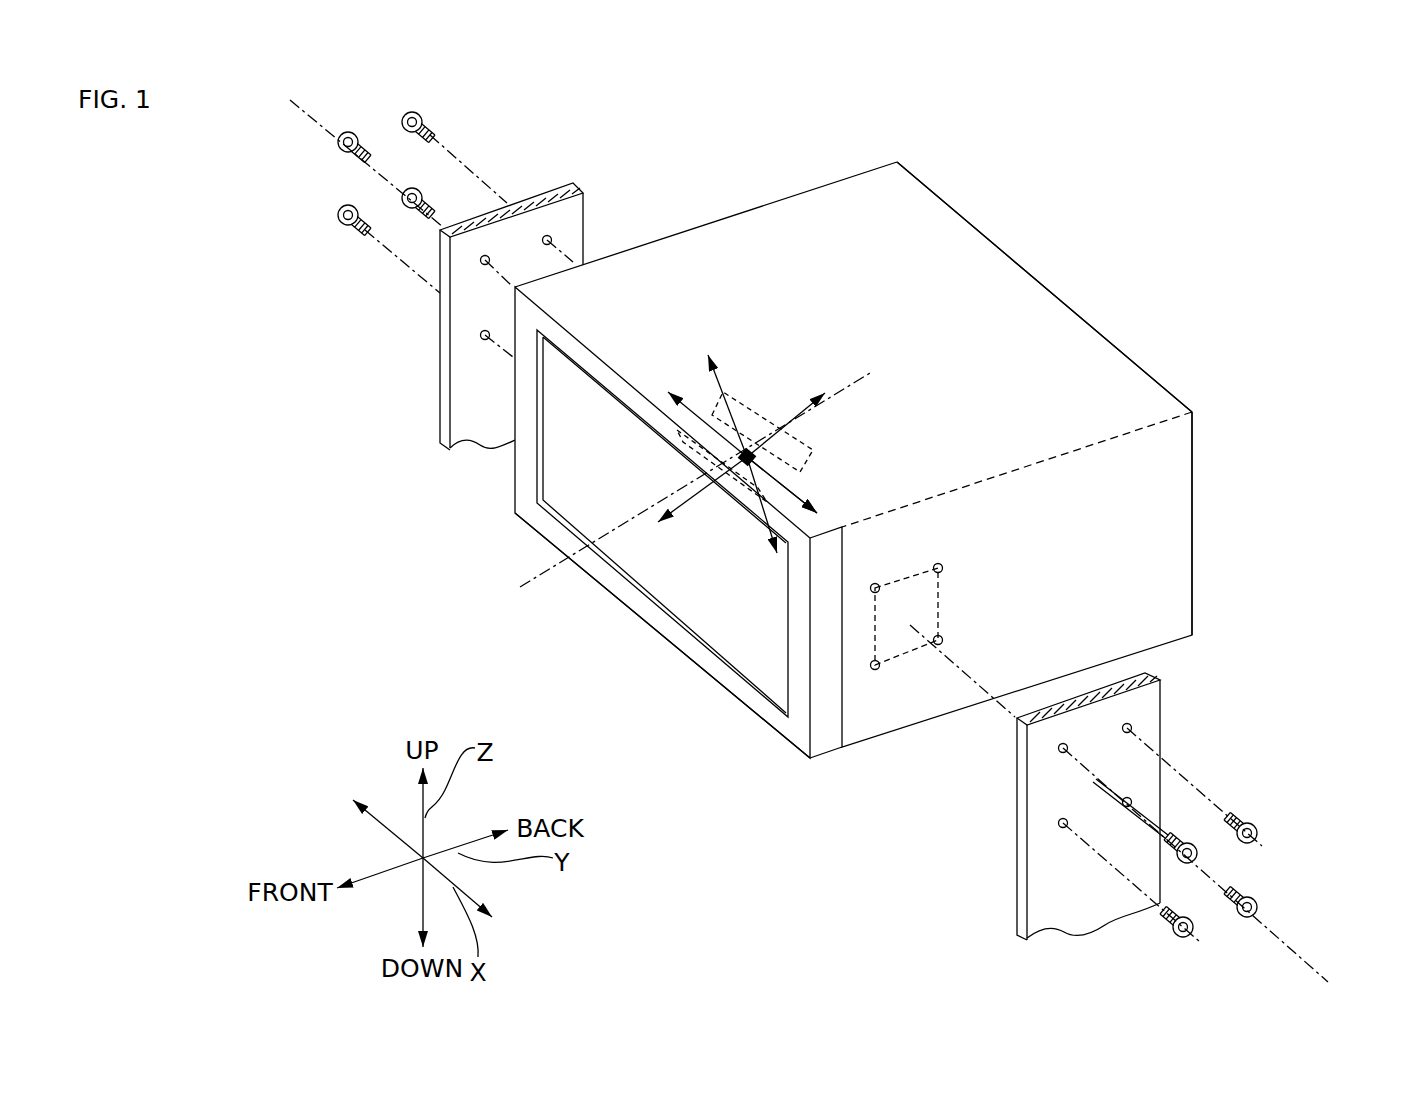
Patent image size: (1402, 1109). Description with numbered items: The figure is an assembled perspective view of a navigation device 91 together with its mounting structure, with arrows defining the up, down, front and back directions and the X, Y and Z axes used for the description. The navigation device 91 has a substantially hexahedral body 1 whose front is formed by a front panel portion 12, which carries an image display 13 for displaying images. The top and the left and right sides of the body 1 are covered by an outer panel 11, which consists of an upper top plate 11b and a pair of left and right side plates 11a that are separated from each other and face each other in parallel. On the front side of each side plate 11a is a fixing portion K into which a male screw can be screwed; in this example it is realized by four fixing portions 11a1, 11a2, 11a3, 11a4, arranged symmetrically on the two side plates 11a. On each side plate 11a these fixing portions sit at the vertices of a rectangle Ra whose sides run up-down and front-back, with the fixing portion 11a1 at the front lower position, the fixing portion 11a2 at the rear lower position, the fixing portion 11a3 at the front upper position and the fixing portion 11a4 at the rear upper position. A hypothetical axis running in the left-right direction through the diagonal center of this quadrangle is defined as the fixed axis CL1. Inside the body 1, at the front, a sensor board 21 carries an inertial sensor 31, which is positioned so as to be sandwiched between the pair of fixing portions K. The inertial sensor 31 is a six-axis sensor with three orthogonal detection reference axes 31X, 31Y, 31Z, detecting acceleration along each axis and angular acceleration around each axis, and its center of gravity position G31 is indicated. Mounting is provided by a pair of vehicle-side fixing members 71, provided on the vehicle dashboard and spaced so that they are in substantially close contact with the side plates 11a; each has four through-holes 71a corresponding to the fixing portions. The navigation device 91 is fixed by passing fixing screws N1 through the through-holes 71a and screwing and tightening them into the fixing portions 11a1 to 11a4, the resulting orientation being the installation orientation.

The body 1 is at (802, 190).
The outer panel 11 is at (1040, 320).
The side plate 11a is at (753, 240).
The top plate 11b is at (1105, 395).
The fixing portion 11a1 is at (875, 670).
The fixing portion 11a2 is at (943, 641).
The fixing portion 11a3 is at (875, 583).
The fixing portion 11a4 is at (943, 568).
The front panel portion 12 is at (783, 728).
The image display 13 is at (693, 588).
The sensor board 21 is at (822, 400).
The inertial sensor 31 is at (740, 483).
The detection reference axis 31X is at (793, 477).
The detection reference axis 31Y is at (800, 400).
The detection reference axis 31Z is at (720, 380).
The vehicle-side fixing member 71 is at (563, 215).
The through-hole 71a is at (552, 240).
The navigation device 91 is at (1040, 215).
The fixing screw N1 is at (405, 188).
The fixed axis CL1 is at (318, 130).
The center of gravity position G31 is at (668, 486).
The fixing portion K is at (497, 478).
The rectangle Ra is at (910, 576).